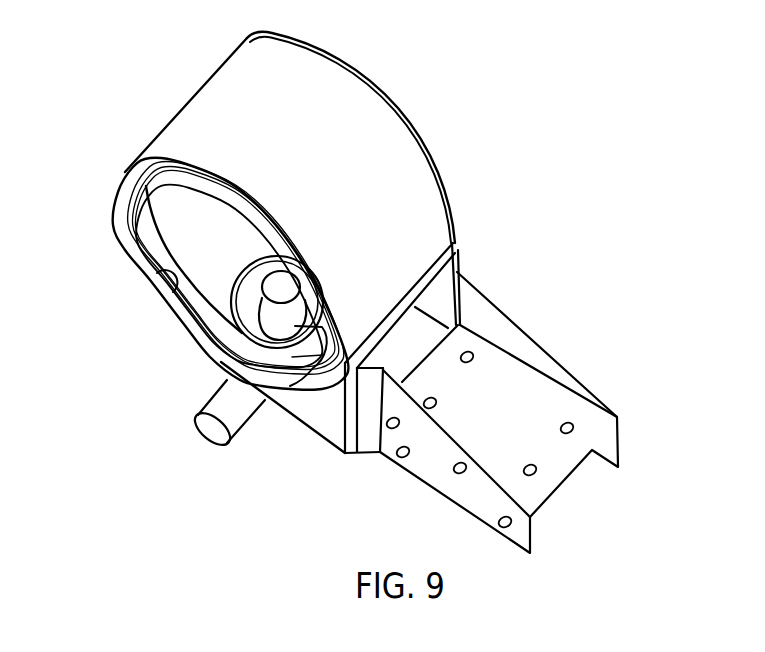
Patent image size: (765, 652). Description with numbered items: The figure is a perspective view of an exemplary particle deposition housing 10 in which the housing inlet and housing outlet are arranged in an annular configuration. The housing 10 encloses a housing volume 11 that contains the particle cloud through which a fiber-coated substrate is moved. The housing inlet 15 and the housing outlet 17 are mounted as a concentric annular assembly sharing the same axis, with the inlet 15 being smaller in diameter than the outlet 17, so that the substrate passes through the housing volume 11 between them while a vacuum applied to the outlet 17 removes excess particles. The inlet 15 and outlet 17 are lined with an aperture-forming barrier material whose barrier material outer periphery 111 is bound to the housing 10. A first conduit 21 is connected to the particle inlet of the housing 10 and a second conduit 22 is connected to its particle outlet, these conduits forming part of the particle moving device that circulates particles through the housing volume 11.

The particle deposition housing 10 is at (415, 193).
The housing volume 11 is at (207, 225).
The housing inlet 15 is at (143, 240).
The housing outlet 17 is at (392, 98).
The first conduit 21 is at (263, 305).
The second conduit 22 is at (297, 337).
The barrier material outer periphery 111 is at (168, 292).